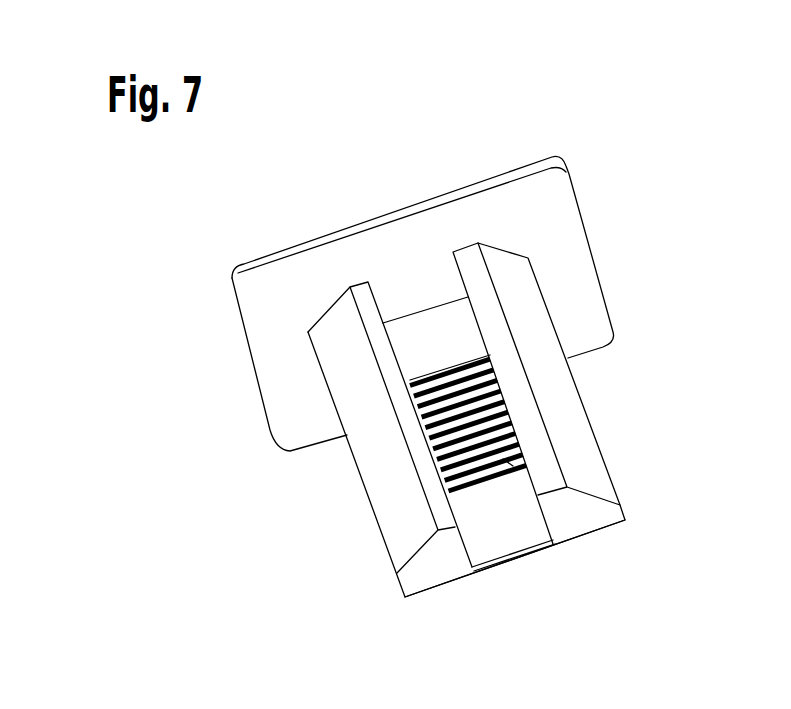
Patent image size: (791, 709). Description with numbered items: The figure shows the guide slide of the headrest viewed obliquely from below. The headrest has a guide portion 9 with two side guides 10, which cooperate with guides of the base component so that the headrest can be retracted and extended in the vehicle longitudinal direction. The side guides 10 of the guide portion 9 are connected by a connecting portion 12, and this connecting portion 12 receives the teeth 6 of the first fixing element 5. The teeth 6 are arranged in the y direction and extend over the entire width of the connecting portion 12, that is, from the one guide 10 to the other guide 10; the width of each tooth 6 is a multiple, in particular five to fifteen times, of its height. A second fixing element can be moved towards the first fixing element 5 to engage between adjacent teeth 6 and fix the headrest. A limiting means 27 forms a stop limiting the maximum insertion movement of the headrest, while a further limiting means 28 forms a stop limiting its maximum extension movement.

The first fixing element 5 is at (413, 329).
The teeth 6 is at (443, 486).
The guide portion 9 is at (382, 587).
The side guides 10 is at (570, 425).
The connecting portion 12 is at (495, 527).
The limiting means 27 is at (567, 363).
The further limiting means 28 is at (510, 466).